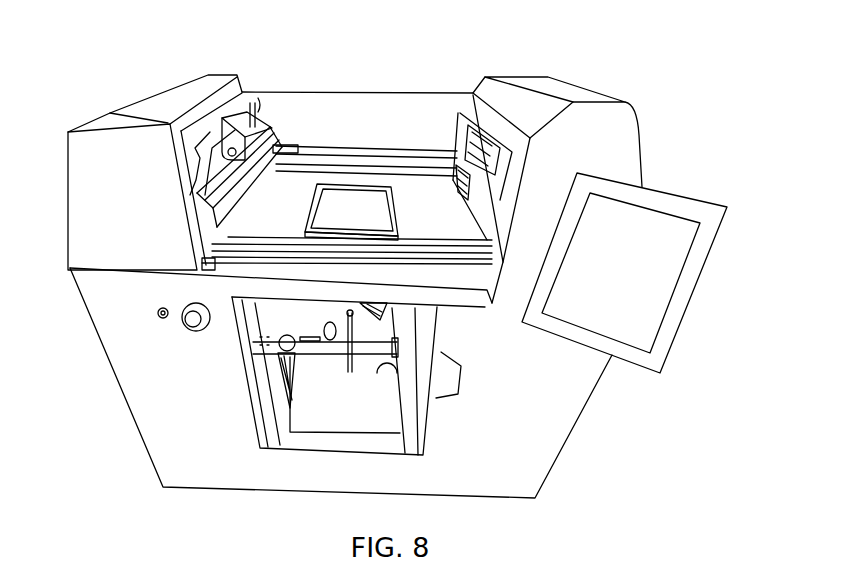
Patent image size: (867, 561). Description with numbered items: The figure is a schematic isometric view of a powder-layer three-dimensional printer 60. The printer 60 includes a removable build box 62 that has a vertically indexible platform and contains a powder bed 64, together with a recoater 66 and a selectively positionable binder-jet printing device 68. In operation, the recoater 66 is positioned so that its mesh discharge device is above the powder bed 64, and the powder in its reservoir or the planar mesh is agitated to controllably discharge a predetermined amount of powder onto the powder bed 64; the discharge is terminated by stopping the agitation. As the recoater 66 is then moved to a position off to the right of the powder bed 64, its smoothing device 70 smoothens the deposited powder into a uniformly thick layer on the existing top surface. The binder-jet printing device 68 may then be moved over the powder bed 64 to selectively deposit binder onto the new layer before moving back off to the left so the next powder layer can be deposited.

The powder-layer three-dimensional printer 60 is at (598, 75).
The removable build box 62 is at (374, 187).
The powder bed 64 is at (377, 210).
The recoater 66 is at (470, 157).
The binder-jet printing device 68 is at (270, 142).
The smoothing device 70 is at (468, 183).